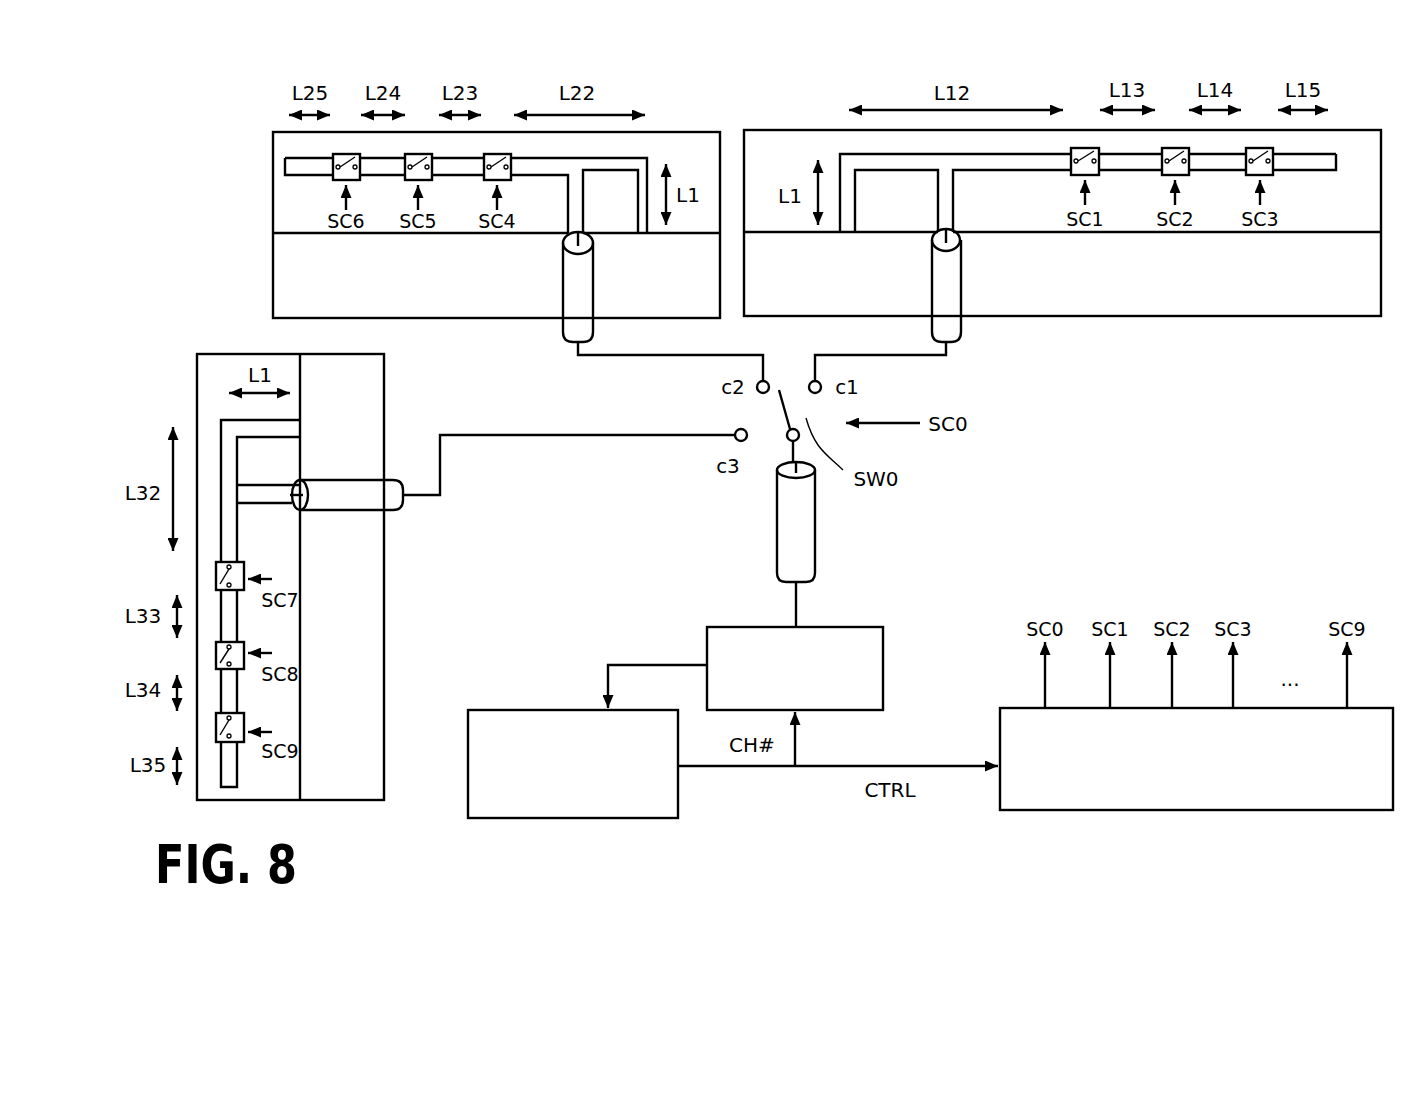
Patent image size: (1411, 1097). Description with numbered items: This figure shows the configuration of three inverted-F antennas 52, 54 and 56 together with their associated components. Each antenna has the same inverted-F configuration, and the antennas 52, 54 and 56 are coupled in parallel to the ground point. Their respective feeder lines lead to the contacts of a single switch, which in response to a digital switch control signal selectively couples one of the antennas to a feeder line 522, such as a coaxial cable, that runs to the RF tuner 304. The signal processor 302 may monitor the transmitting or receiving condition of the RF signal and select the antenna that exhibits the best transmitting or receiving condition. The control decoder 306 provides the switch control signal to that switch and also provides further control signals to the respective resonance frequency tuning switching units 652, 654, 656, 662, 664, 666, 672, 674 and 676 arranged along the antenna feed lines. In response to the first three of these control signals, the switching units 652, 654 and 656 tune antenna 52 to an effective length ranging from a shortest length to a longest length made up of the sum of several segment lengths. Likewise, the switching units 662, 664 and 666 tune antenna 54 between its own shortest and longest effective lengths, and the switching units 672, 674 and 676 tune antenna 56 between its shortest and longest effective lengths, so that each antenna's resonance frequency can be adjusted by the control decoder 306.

The inverted-F antenna 52 is at (856, 155).
The inverted-F antenna 54 is at (649, 156).
The inverted-F antenna 56 is at (219, 425).
The resonance frequency tuning switching unit 652 is at (1085, 147).
The resonance frequency tuning switching unit 654 is at (1176, 147).
The resonance frequency tuning switching unit 656 is at (1262, 147).
The resonance frequency tuning switching unit 662 is at (500, 153).
The resonance frequency tuning switching unit 664 is at (426, 153).
The resonance frequency tuning switching unit 666 is at (346, 153).
The resonance frequency tuning switching unit 672 is at (216, 574).
The resonance frequency tuning switching unit 674 is at (216, 649).
The resonance frequency tuning switching unit 676 is at (216, 727).
The feeder line 522 is at (809, 573).
The signal processor 302 is at (573, 764).
The RF tuner 304 is at (795, 668).
The control decoder 306 is at (1196, 759).